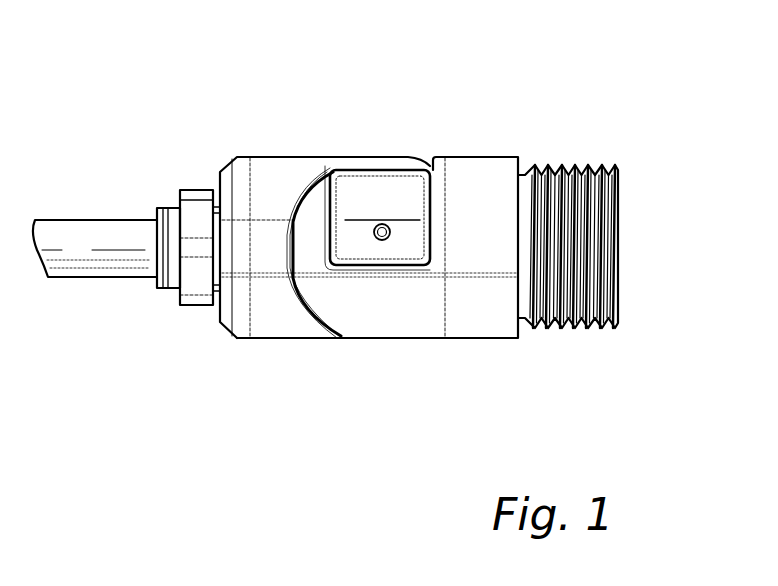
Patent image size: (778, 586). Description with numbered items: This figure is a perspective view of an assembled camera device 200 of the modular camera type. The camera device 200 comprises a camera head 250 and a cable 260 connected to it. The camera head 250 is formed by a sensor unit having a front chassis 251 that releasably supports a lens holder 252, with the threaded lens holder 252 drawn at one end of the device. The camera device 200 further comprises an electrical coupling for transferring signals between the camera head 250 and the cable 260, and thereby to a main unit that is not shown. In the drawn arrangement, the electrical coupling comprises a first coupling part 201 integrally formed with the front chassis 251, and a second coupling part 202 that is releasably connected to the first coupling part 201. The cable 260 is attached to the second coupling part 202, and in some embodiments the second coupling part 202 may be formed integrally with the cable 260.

The camera device 200 is at (418, 237).
The first coupling part 201 is at (400, 315).
The second coupling part 202 is at (273, 178).
The camera head 250 is at (599, 213).
The front chassis 251 is at (437, 197).
The lens holder 252 is at (570, 268).
The cable 260 is at (85, 232).